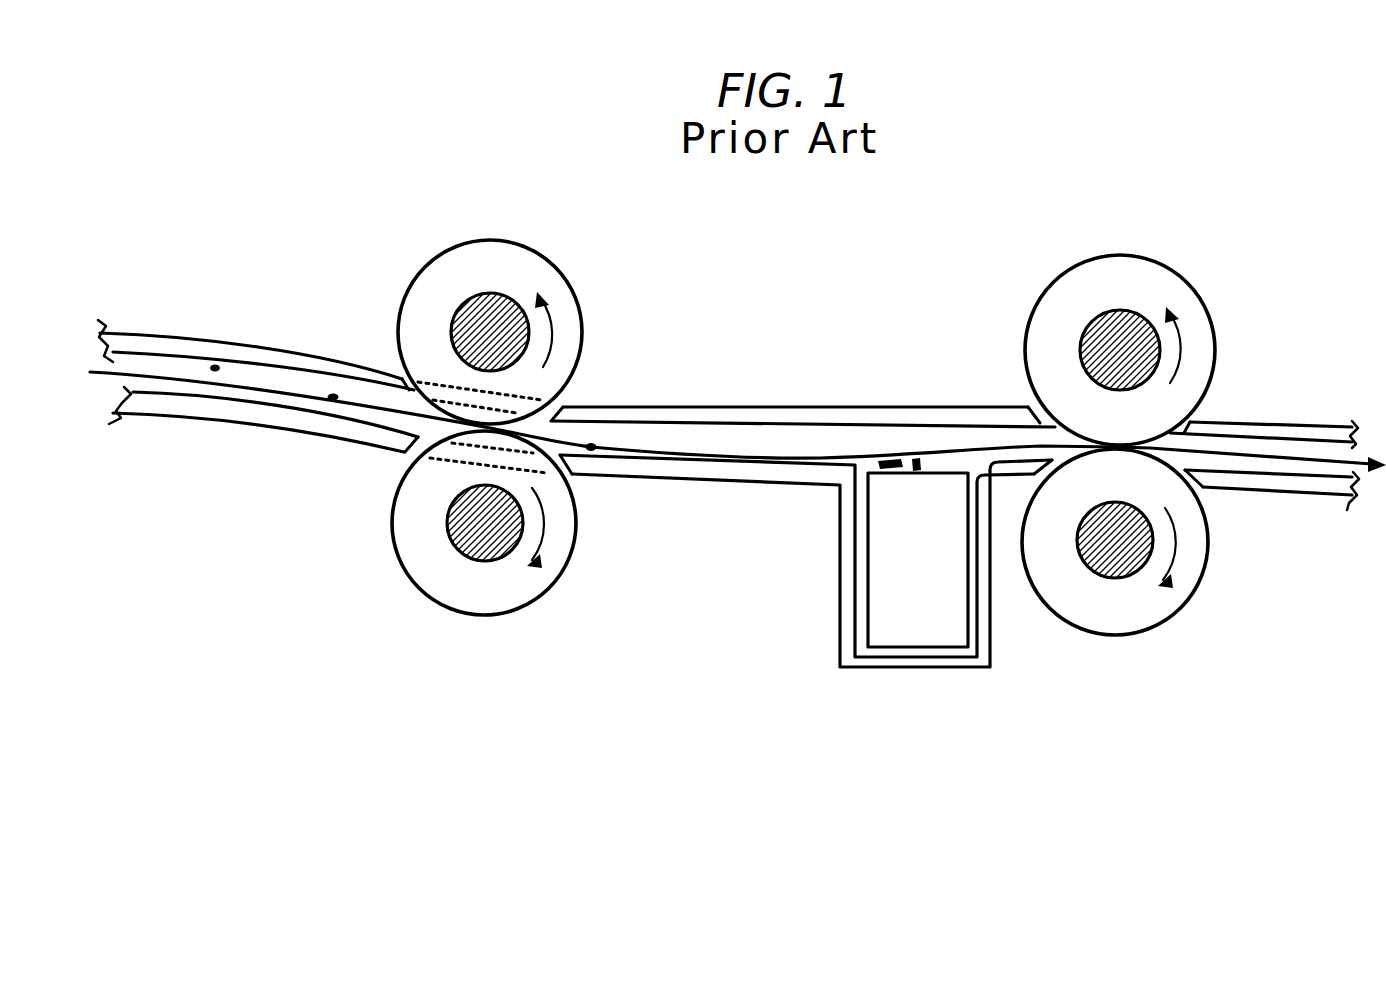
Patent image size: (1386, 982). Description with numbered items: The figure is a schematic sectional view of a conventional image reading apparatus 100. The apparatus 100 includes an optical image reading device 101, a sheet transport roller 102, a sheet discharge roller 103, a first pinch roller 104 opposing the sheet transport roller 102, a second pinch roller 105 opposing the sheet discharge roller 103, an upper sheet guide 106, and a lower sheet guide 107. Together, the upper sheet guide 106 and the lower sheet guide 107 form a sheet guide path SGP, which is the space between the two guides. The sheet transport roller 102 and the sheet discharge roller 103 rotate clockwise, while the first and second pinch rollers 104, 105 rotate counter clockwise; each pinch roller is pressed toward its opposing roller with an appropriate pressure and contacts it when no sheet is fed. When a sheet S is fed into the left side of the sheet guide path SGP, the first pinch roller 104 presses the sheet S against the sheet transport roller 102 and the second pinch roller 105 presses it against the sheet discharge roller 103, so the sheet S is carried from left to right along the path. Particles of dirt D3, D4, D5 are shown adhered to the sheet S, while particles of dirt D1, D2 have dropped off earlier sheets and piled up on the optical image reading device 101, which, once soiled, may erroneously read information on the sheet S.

The image reading apparatus 100 is at (863, 266).
The optical image reading device 101 is at (923, 627).
The sheet transport roller 102 is at (442, 603).
The sheet discharge roller 103 is at (1202, 576).
The first pinch roller 104 is at (553, 263).
The second pinch roller 105 is at (1158, 265).
The upper sheet guide 106 is at (892, 405).
The lower sheet guide 107 is at (658, 480).
The particle of dirt D1 is at (881, 467).
The particle of dirt D2 is at (912, 470).
The particle of dirt D3 is at (591, 443).
The particle of dirt D4 is at (333, 397).
The particle of dirt D5 is at (215, 368).
The sheet S is at (167, 374).
The sheet guide path SGP is at (227, 388).